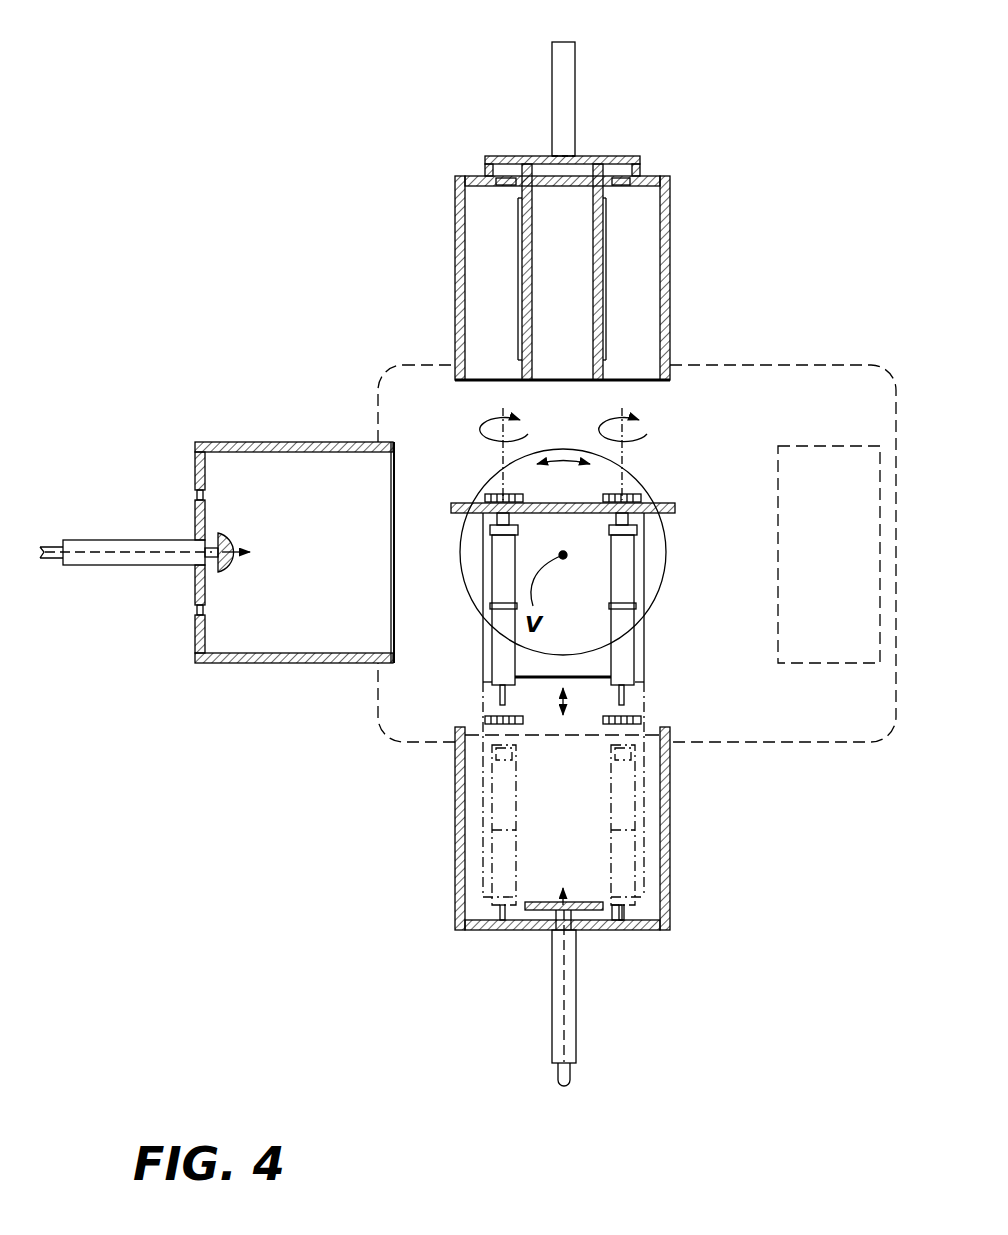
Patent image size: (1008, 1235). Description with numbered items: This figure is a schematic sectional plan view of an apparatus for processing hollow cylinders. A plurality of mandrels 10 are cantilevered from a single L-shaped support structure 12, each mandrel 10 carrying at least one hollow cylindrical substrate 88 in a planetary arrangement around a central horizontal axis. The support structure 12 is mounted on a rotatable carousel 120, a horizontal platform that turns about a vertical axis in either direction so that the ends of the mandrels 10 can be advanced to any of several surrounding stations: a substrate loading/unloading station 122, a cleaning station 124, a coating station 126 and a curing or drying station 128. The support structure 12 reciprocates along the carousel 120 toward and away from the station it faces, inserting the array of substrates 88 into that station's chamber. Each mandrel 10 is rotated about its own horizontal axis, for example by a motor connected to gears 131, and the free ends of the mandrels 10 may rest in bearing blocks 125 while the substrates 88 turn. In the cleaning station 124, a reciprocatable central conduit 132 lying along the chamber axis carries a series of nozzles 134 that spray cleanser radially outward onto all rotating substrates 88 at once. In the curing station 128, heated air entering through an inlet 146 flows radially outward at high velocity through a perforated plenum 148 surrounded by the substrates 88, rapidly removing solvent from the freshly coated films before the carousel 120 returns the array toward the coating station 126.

The mandrel 10 is at (640, 692).
The support structure 12 is at (546, 502).
The substrate 88 is at (648, 644).
The carousel 120 is at (667, 556).
The substrate loading/unloading station 122 is at (845, 546).
The cleaning station 124 is at (684, 814).
The bearing block 125 is at (620, 182).
The coating station 126 is at (215, 405).
The curing station 128 is at (448, 165).
The gears 131 is at (628, 498).
The central conduit 132 is at (600, 930).
The nozzles 134 is at (530, 930).
The inlet 146 is at (562, 50).
The perforated plenum 148 is at (606, 297).